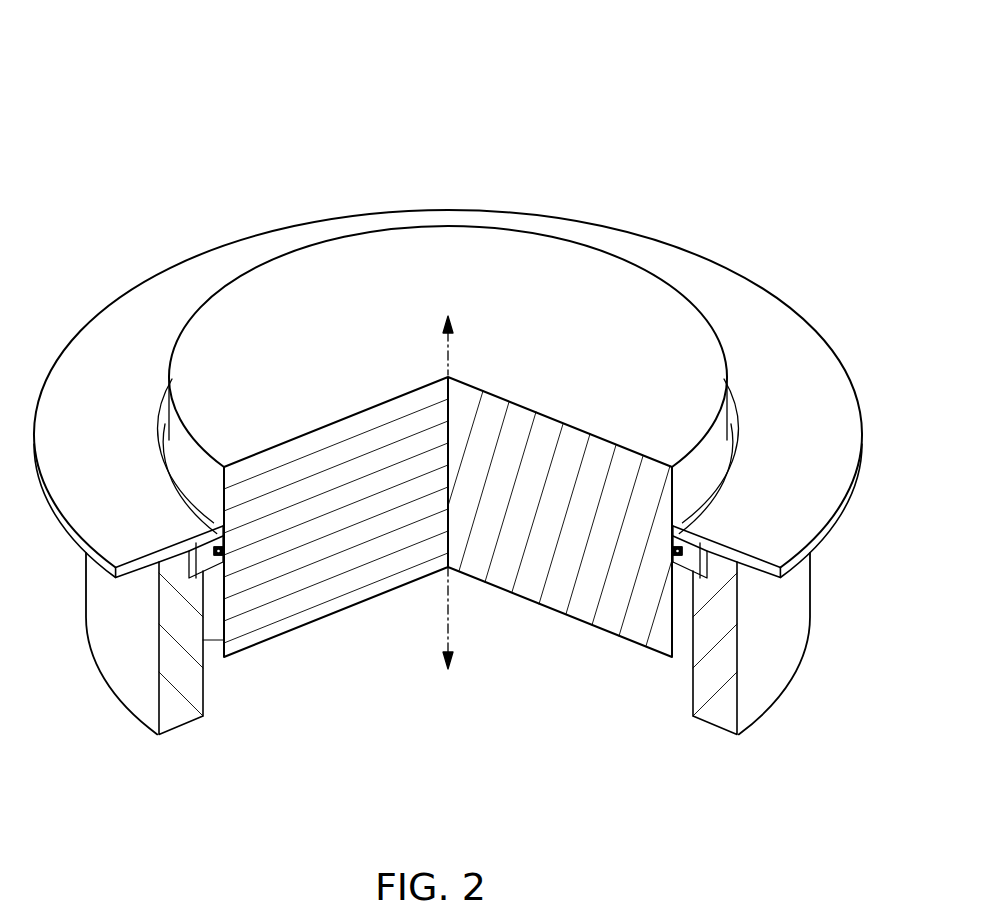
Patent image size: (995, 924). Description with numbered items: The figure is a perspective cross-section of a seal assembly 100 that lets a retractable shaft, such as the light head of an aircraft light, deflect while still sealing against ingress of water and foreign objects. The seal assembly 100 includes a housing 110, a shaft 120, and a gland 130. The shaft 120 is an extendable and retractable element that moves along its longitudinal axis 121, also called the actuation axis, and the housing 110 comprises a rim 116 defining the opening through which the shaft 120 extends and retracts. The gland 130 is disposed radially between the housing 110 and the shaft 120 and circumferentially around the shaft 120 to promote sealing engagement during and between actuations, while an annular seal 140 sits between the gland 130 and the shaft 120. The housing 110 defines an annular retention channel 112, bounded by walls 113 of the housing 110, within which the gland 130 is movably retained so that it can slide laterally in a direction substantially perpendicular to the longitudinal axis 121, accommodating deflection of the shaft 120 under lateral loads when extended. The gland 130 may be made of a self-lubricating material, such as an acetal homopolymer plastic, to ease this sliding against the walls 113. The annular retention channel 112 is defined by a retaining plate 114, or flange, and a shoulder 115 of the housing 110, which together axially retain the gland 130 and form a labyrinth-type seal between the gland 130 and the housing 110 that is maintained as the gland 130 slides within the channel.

The seal assembly 100 is at (119, 72).
The housing 110 is at (792, 653).
The annular retention channel 112 is at (722, 551).
The walls 113 is at (200, 558).
The retaining plate 114 is at (674, 528).
The shoulder 115 is at (700, 578).
The rim 116 is at (741, 420).
The shaft 120 is at (556, 606).
The longitudinal axis 121 is at (453, 622).
The gland 130 is at (216, 548).
The annular seal 140 is at (232, 553).